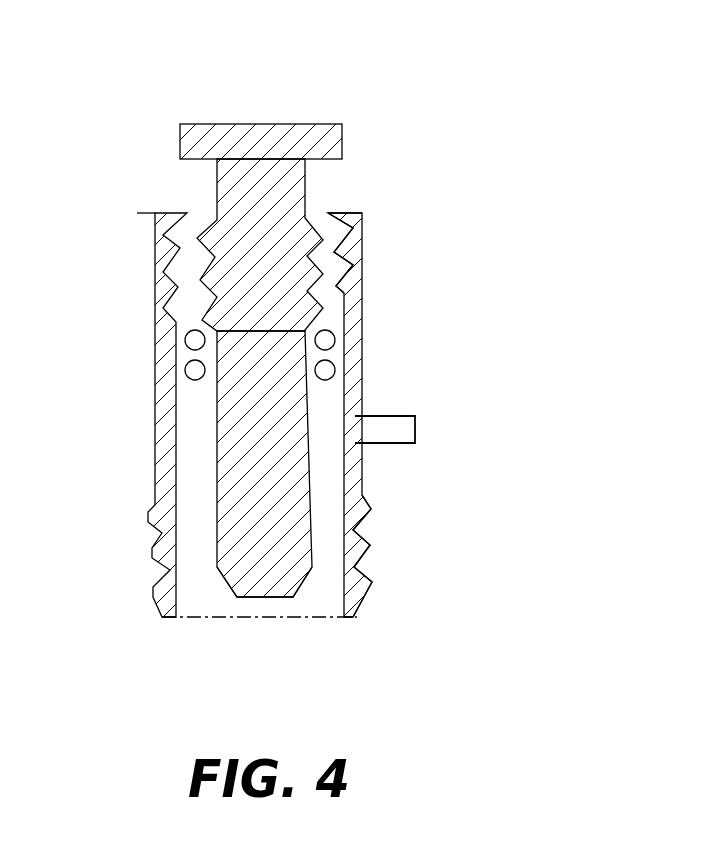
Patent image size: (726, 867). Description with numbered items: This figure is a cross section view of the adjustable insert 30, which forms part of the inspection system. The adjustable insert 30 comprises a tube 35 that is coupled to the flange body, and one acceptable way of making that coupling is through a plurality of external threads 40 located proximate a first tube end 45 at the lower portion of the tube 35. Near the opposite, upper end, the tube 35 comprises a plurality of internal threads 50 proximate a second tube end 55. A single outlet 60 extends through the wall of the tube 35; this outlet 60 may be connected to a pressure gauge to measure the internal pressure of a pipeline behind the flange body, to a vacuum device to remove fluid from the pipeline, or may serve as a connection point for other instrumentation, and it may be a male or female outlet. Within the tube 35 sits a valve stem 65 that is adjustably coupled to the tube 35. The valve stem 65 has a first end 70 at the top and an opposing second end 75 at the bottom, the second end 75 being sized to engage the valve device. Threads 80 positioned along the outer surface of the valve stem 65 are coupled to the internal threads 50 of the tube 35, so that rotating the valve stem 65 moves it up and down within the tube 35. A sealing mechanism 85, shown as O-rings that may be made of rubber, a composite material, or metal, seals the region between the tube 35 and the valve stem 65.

The adjustable insert 30 is at (378, 118).
The tube 35 is at (366, 337).
The external threads 40 is at (373, 582).
The first tube end 45 is at (353, 619).
The internal threads 50 is at (350, 251).
The second tube end 55 is at (347, 213).
The outlet 60 is at (428, 429).
The valve stem 65 is at (270, 320).
The first end 70 is at (172, 142).
The second end 75 is at (242, 598).
The threads 80 is at (212, 225).
The sealing mechanism 85 is at (178, 373).